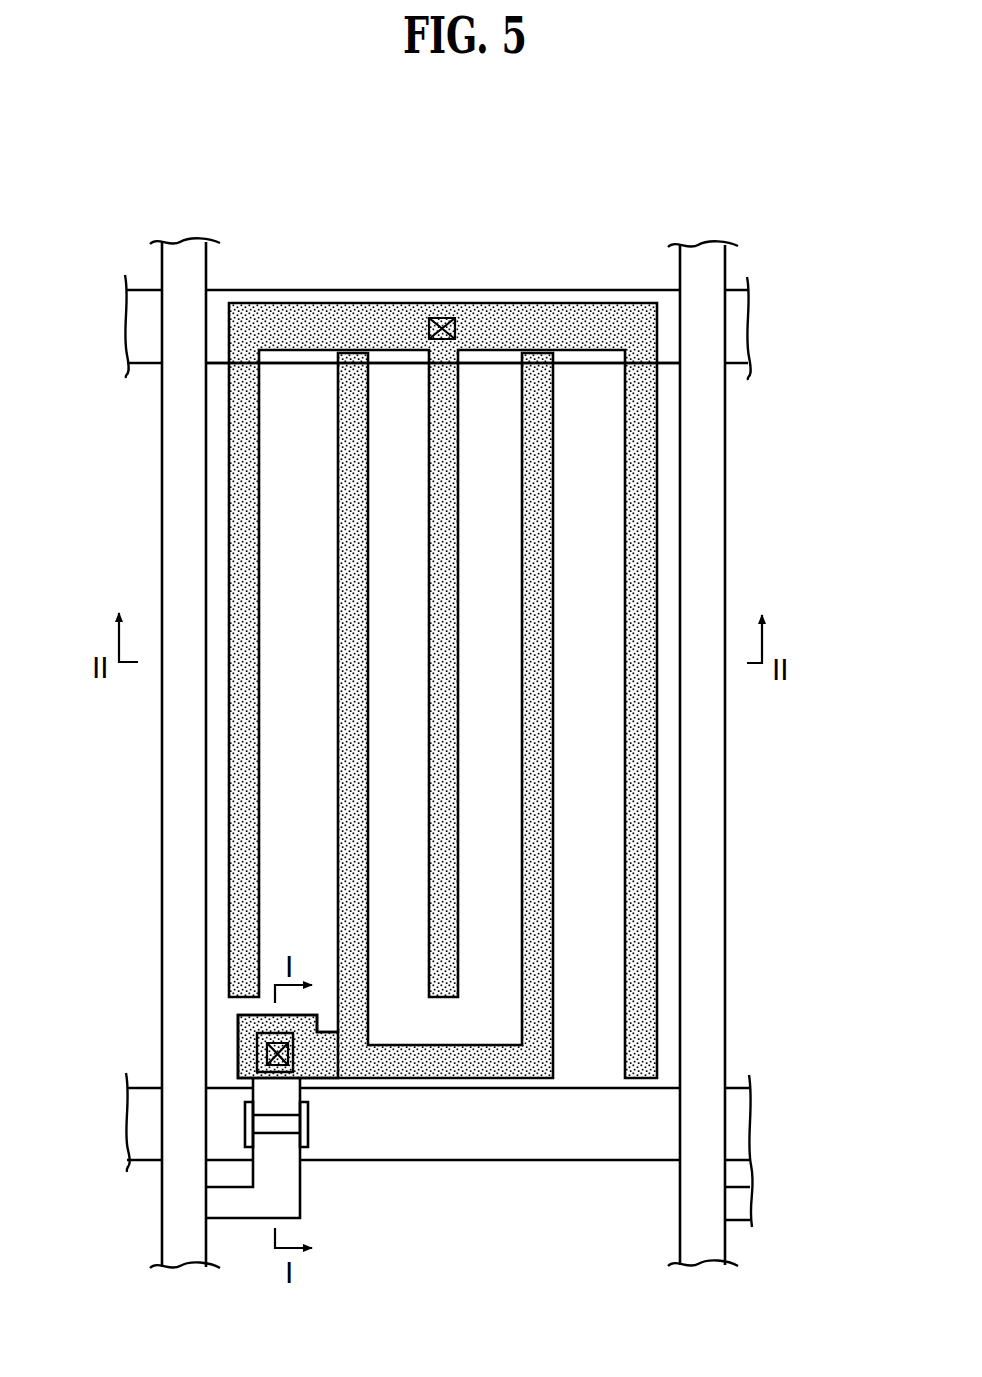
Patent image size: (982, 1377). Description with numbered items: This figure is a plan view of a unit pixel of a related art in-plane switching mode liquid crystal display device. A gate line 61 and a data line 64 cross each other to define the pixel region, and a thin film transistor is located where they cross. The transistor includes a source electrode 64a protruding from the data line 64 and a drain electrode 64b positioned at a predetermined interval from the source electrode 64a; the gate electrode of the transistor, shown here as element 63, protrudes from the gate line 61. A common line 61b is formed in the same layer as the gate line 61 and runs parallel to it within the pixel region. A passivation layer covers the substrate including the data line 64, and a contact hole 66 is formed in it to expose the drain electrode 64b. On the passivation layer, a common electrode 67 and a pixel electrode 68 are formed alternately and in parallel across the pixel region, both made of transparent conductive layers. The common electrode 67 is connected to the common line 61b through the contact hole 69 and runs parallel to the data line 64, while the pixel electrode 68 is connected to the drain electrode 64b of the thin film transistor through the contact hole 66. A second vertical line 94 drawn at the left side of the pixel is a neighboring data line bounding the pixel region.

The gate line 61 is at (507, 1148).
The common line 61b is at (275, 290).
The gate electrode 63 is at (308, 1127).
The data line 64 is at (708, 978).
The source electrode 64a is at (263, 1203).
The drain electrode 64b is at (237, 1027).
The contact hole 66 is at (260, 1050).
The common electrode 67 is at (640, 692).
The pixel electrode 68 is at (375, 848).
The contact hole 69 is at (442, 318).
The data line 94 is at (182, 905).